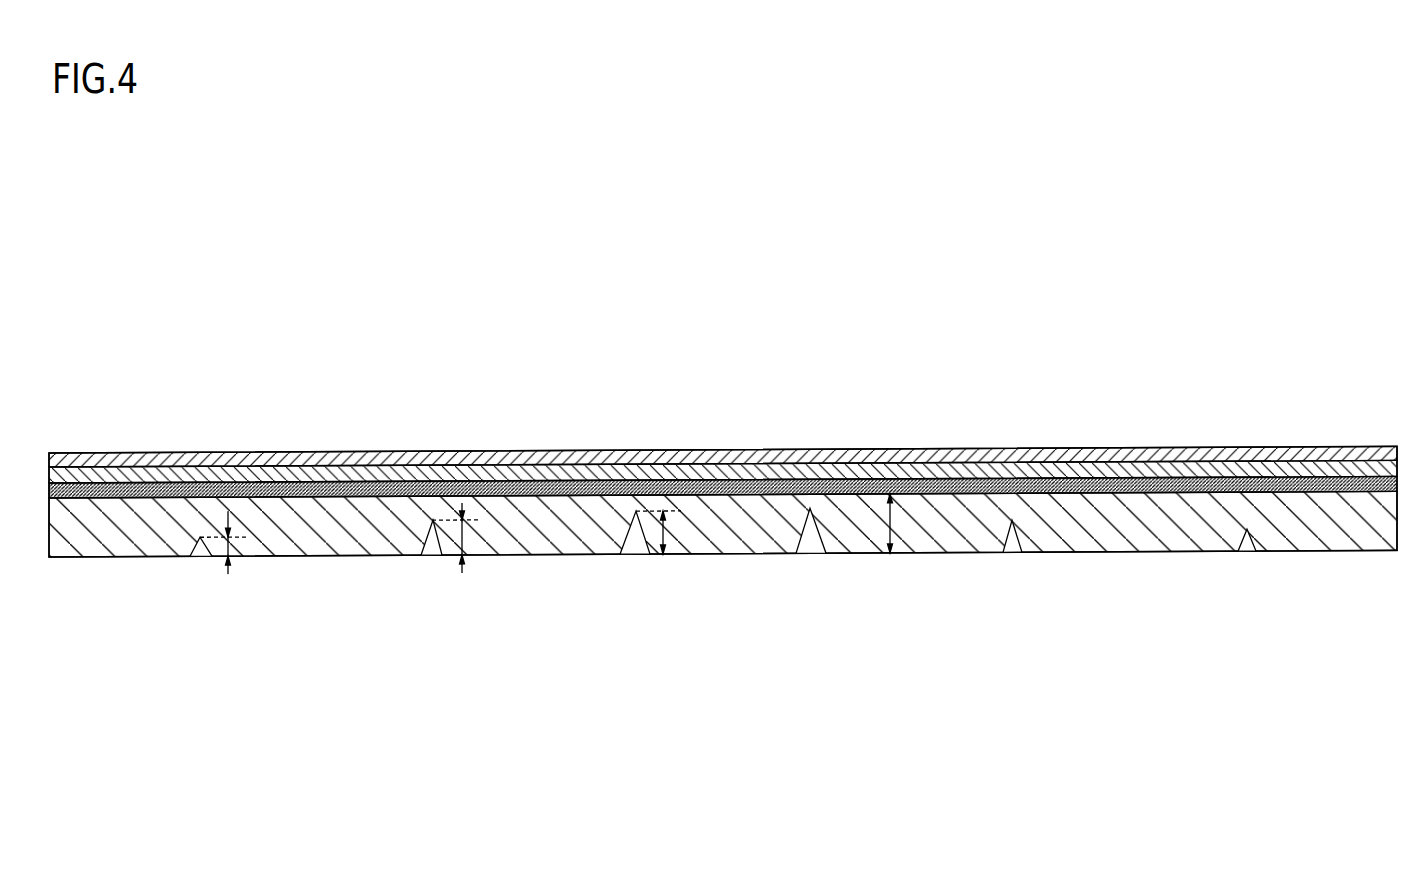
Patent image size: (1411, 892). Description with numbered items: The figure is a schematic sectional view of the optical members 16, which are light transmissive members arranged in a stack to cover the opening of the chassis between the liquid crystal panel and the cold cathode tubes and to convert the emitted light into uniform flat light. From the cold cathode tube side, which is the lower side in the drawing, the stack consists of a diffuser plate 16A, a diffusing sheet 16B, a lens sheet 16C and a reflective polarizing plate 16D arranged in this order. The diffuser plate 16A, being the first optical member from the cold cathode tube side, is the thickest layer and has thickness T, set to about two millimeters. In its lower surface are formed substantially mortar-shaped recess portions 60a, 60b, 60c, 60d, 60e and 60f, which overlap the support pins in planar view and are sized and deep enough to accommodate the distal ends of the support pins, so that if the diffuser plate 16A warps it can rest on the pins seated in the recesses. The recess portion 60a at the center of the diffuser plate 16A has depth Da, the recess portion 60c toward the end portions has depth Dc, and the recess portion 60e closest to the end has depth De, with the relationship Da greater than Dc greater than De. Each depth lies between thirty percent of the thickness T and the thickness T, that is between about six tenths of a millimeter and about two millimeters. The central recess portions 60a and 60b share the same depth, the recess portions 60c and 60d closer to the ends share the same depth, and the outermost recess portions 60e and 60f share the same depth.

The optical members 16 is at (347, 335).
The diffuser plate 16A is at (78, 516).
The diffusing sheet 16B is at (144, 487).
The lens sheet 16C is at (215, 472).
The reflective polarizing plate 16D is at (272, 461).
The recess portion 60a is at (647, 553).
The recess portion 60b is at (820, 552).
The recess portion 60c is at (441, 552).
The recess portion 60d is at (1019, 548).
The recess portion 60e is at (210, 553).
The recess portion 60f is at (1254, 549).
The depth of recess portion 60a Da is at (669, 529).
The depth of recess portion 60c Dc is at (463, 552).
The depth of recess portion 60e De is at (233, 552).
The thickness of diffuser plate T is at (893, 528).